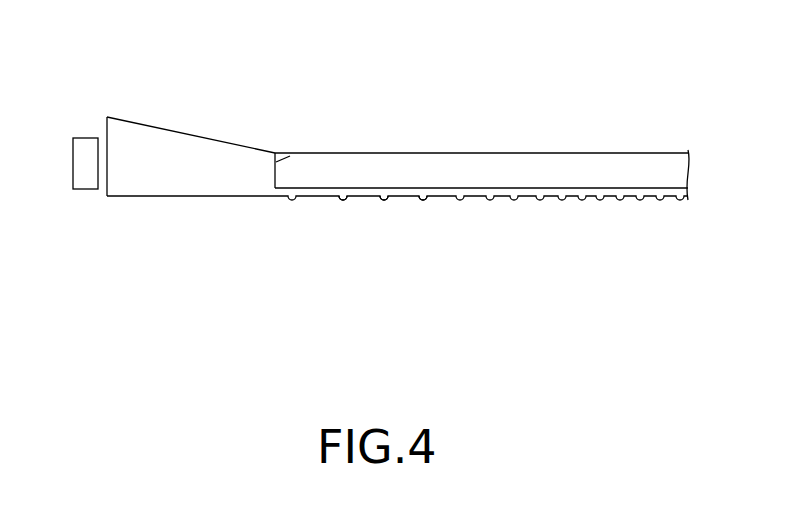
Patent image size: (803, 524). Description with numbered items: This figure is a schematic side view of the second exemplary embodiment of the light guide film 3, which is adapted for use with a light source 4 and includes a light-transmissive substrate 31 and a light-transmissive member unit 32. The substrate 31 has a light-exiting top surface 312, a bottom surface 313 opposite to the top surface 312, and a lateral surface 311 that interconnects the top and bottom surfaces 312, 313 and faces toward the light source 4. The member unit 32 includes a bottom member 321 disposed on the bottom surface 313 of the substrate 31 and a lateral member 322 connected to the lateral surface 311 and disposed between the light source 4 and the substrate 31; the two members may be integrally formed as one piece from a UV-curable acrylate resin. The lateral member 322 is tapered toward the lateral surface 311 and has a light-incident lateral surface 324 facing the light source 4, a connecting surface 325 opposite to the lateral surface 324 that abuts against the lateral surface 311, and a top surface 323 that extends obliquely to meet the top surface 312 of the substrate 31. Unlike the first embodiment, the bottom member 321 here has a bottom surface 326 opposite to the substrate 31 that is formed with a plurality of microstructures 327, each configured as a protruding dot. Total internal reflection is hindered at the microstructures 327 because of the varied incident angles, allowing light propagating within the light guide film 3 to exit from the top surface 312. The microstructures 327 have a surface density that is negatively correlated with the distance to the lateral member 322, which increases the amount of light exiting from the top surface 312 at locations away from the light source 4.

The light guide film 3 is at (463, 162).
The light-transmissive substrate 31 is at (463, 169).
The lateral surface 311 is at (259, 182).
The light-exiting top surface 312 is at (540, 153).
The bottom surface 313 is at (593, 190).
The light-transmissive member unit 32 is at (214, 151).
The bottom member 321 is at (473, 197).
The lateral member 322 is at (177, 189).
The top surface 323 is at (142, 124).
The light-incident lateral surface 324 is at (107, 196).
The connecting surface 325 is at (287, 158).
The bottom surface 326 is at (403, 197).
The microstructures 327 is at (383, 199).
The light source 4 is at (85, 146).